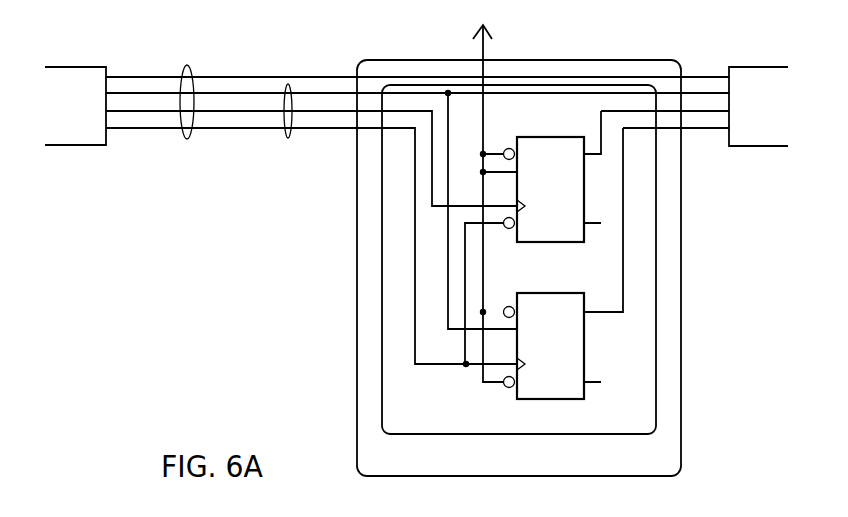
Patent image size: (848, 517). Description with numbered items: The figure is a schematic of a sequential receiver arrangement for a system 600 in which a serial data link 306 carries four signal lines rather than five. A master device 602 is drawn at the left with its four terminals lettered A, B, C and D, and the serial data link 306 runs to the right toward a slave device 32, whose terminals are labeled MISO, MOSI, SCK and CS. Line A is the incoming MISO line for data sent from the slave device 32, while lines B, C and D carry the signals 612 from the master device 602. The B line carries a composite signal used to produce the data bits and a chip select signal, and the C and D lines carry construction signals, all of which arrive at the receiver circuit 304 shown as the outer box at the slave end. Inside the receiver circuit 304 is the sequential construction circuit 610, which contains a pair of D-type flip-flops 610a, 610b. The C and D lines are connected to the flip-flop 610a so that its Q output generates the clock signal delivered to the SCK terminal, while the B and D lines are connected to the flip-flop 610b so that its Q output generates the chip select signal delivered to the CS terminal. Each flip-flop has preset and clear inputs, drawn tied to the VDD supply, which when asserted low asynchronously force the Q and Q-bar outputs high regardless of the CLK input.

The system 600 is at (230, 266).
The master device 602 is at (77, 67).
The serial data link 306 is at (187, 65).
The signals 612 is at (288, 138).
The slave device 32 is at (760, 67).
The receiver circuit 304 is at (659, 466).
The sequential construction circuit 610 is at (635, 426).
The flip-flop 610a is at (573, 137).
The flip-flop 610b is at (573, 293).